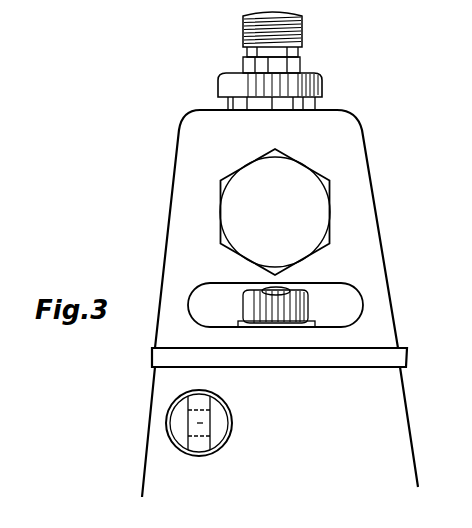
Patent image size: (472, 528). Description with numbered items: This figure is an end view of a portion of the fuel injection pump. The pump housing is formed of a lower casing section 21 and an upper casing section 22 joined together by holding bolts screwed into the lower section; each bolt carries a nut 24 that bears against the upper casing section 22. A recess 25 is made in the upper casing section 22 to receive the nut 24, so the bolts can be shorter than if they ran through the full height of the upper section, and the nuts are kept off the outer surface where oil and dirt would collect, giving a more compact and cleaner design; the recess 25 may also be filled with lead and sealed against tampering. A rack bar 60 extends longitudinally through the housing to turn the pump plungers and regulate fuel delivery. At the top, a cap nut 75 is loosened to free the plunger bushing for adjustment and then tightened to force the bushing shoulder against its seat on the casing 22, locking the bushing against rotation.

The lower casing section 21 is at (150, 412).
The upper casing section 22 is at (373, 195).
The nut 24 is at (310, 308).
The recess 25 is at (332, 285).
The rack bar 60 is at (208, 422).
The cap nut 75 is at (232, 87).